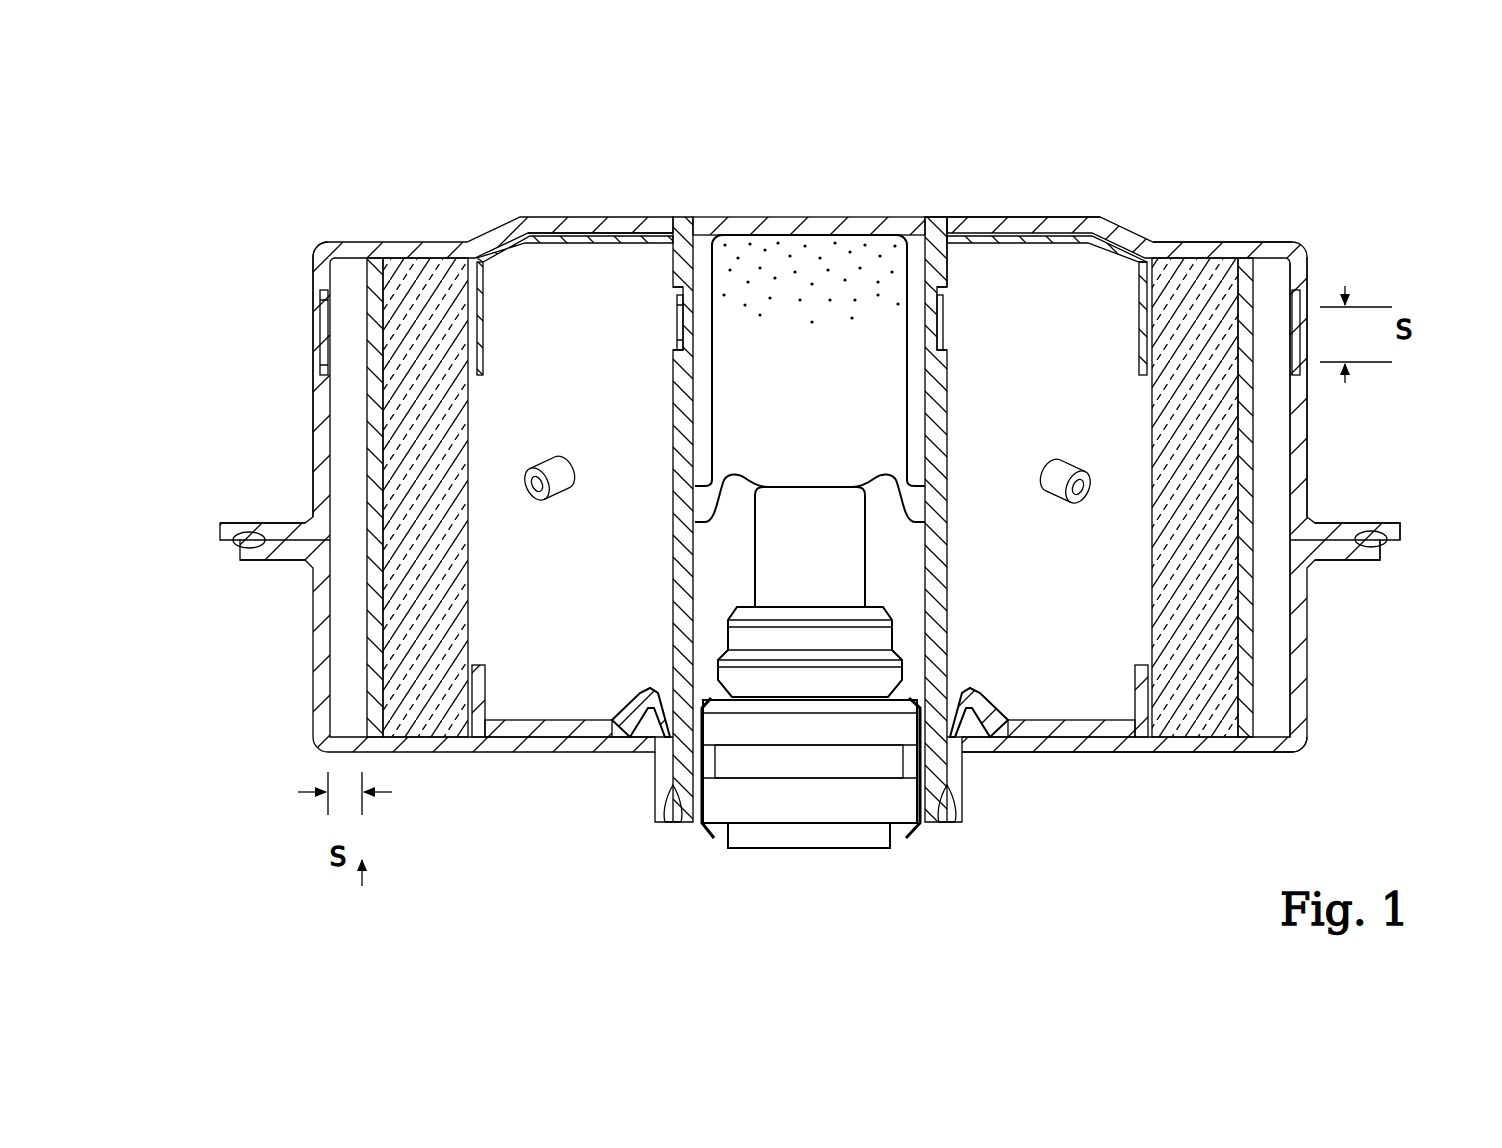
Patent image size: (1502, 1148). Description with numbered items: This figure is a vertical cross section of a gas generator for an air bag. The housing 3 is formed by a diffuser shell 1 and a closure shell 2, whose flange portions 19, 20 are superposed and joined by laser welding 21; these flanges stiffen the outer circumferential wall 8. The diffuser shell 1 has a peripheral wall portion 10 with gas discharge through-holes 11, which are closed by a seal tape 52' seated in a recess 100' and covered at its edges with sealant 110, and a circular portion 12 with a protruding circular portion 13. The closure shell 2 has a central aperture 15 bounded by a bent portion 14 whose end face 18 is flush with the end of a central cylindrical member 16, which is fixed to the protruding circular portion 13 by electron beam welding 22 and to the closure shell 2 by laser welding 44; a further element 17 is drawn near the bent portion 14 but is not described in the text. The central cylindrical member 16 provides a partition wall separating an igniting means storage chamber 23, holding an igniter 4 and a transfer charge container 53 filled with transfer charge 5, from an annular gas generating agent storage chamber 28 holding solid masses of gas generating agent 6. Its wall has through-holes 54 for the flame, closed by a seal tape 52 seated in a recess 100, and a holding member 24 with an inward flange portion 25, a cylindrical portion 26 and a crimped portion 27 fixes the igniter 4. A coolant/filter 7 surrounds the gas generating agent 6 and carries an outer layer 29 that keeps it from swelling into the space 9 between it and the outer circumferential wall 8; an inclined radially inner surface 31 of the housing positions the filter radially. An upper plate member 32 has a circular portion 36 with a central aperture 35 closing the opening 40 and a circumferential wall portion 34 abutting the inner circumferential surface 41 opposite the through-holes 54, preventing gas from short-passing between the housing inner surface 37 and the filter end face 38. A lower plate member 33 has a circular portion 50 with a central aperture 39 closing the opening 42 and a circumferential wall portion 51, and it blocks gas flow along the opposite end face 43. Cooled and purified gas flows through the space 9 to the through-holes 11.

The diffuser shell 1 is at (1042, 214).
The closure shell 2 is at (437, 755).
The housing 3 is at (972, 197).
The igniter 4 is at (685, 565).
The transfer charge 5 is at (840, 250).
The gas generating agent 6 is at (551, 473).
The coolant/filter 7 is at (1155, 580).
The outer circumferential wall 8 is at (1312, 432).
The space 9 is at (1262, 262).
The peripheral wall portion 10 is at (313, 455).
The through-holes 11 is at (297, 335).
The circular portion 12 is at (1200, 255).
The protruding circular portion 13 is at (655, 218).
The bent portion 14 is at (965, 790).
The central aperture 15 is at (733, 755).
The central cylindrical member 16 is at (950, 377).
The left seal drop 17 is at (675, 830).
The end face 18 is at (658, 825).
The flange portion 19 is at (1395, 520).
The flange portion 20 is at (1355, 560).
The laser welding 21 is at (1395, 540).
The electron beam welding 22 is at (935, 225).
The igniting means storage chamber 23 is at (780, 305).
The holding member 24 is at (945, 735).
The inward flange portion 25 is at (950, 692).
The cylindrical portion 26 is at (882, 760).
The crimped portion 27 is at (905, 840).
The gas generating agent storage chamber 28 is at (1083, 280).
The outer layer 29 is at (1258, 660).
The radially inner surface 31 is at (1298, 752).
The plate member 32 is at (617, 227).
The plate member 33 is at (1076, 755).
The circumferential wall portion 34 is at (485, 300).
The central aperture 35 is at (955, 275).
The circular portion 36 is at (560, 240).
The inner surface 37 is at (340, 265).
The end face 38 is at (430, 250).
The central aperture 39 is at (688, 740).
The opening 40 is at (1143, 330).
The inner circumferential surface 41 is at (1068, 473).
The opening 42 is at (1140, 690).
The end face 43 is at (1195, 755).
The laser welding 44 is at (957, 825).
The circular portion 50 is at (500, 735).
The circumferential wall portion 51 is at (487, 680).
The seal tape 52 is at (630, 322).
The seal tape 52' is at (267, 366).
The transfer charge container 53 is at (708, 415).
The through-holes 54 is at (680, 330).
The recess 100 is at (642, 352).
The recess 100' is at (260, 329).
The sealant 110 is at (1300, 252).